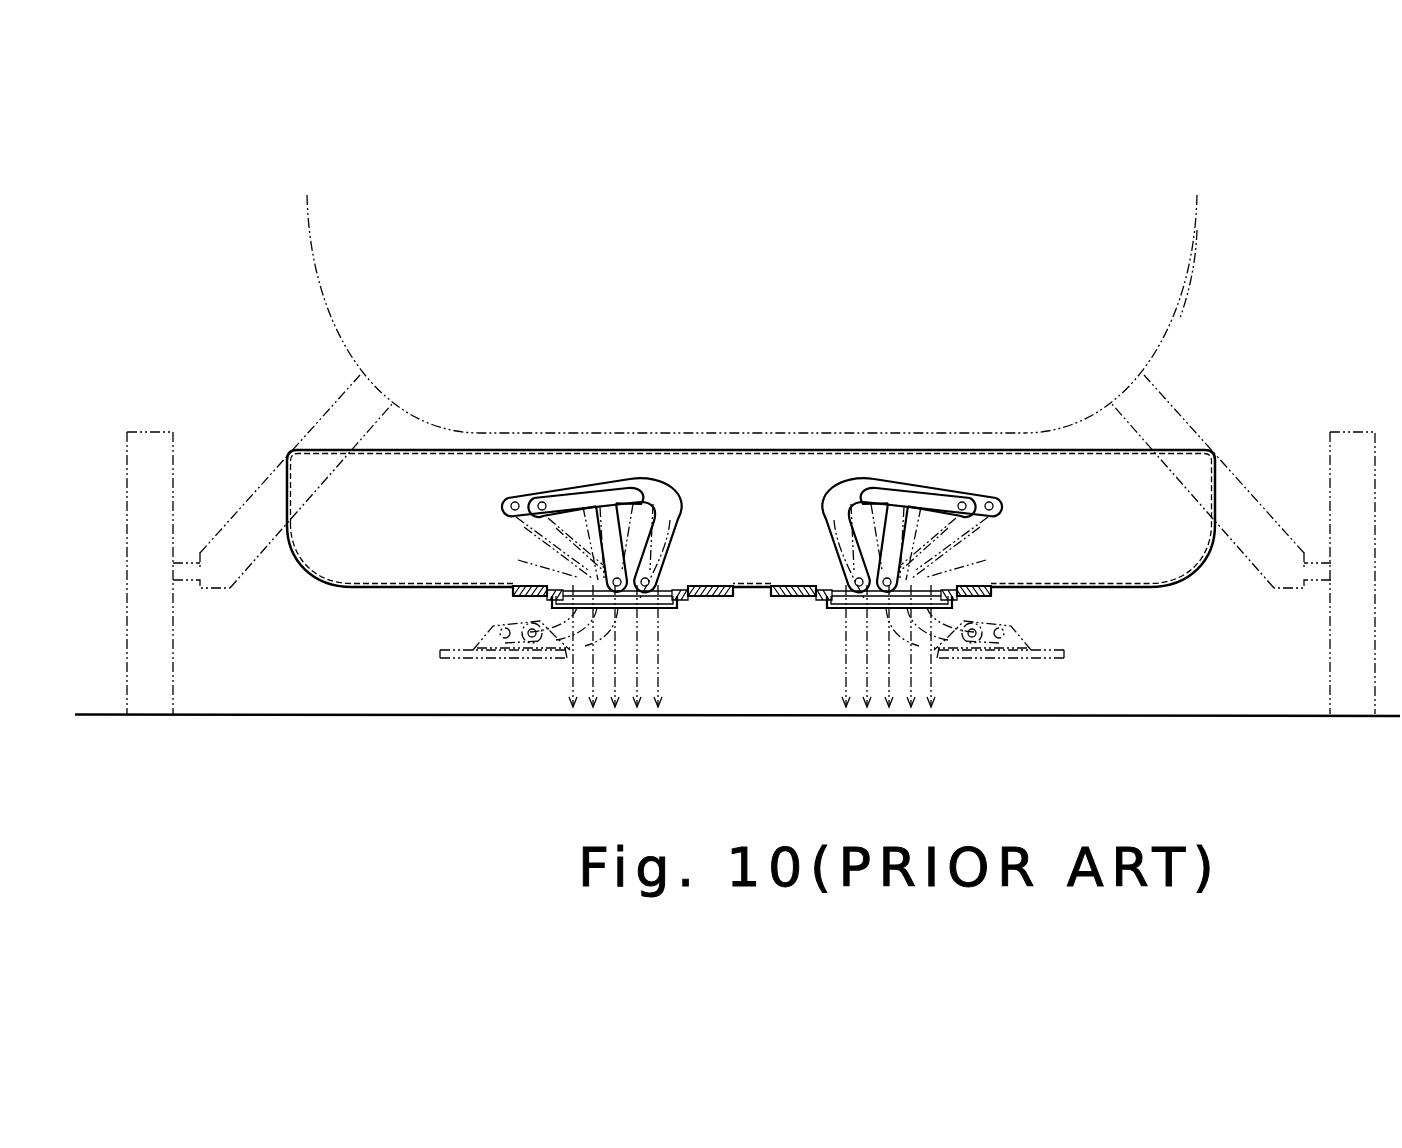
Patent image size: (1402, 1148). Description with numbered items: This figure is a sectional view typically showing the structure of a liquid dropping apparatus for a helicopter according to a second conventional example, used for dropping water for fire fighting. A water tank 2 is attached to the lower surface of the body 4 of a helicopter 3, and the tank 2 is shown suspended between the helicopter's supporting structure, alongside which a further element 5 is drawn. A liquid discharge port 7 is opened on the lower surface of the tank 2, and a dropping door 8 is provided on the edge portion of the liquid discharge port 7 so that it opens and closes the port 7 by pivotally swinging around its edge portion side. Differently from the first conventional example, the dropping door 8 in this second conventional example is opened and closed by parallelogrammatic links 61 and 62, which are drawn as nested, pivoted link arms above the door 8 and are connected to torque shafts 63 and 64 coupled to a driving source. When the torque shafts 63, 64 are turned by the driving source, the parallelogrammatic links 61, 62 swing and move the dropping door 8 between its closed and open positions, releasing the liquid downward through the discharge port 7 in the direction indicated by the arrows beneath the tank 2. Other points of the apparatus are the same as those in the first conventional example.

The water tank 2 is at (1172, 450).
The helicopter 3 is at (1203, 233).
The body 4 is at (1198, 248).
The pillar 5 is at (1357, 432).
The liquid discharge port 7 is at (674, 606).
The dropping door 8 is at (647, 606).
The parallelogrammatic link 61 is at (672, 496).
The parallelogrammatic link 62 is at (527, 495).
The torque shaft 63 is at (540, 495).
The torque shaft 64 is at (508, 497).